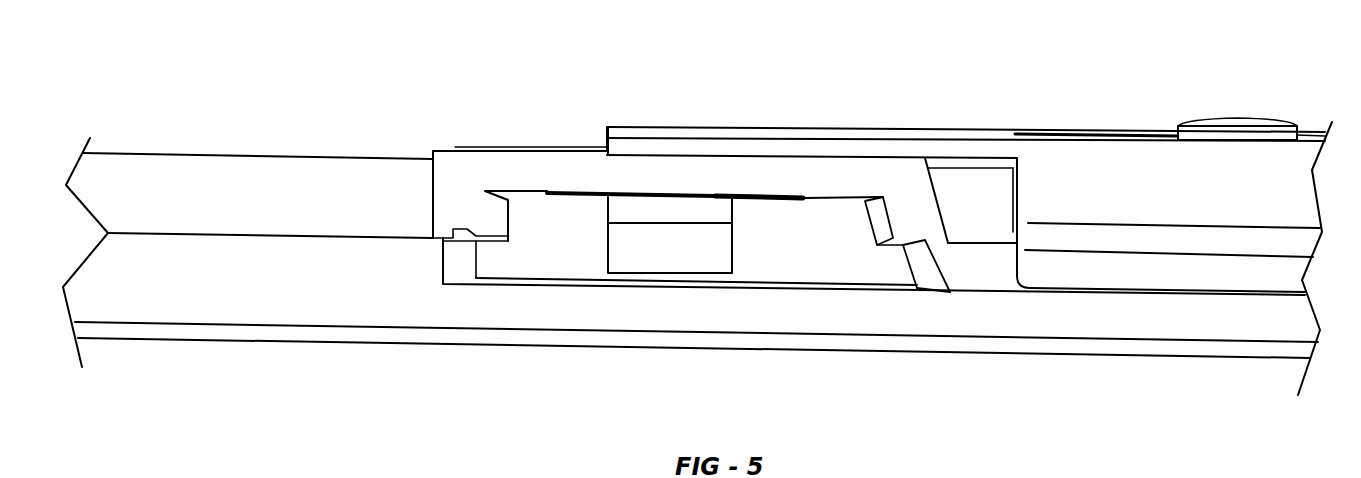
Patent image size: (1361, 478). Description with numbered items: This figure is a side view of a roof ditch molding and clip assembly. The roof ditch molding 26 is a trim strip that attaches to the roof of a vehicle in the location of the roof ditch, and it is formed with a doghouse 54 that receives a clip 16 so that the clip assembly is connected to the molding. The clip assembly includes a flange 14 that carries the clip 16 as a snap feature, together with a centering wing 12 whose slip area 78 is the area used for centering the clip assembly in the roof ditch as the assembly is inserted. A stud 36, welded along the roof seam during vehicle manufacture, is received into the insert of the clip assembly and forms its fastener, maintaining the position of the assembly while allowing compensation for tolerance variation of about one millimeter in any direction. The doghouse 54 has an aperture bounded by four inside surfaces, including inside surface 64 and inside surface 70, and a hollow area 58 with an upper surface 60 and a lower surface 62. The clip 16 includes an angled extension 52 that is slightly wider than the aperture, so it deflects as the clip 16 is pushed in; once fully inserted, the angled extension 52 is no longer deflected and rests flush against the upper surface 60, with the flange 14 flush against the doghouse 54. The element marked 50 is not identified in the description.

The centering wing 12 is at (1225, 268).
The flange 14 is at (787, 128).
The clip 16 is at (708, 207).
The roof ditch molding 26 is at (226, 283).
The stud 36 is at (1265, 120).
The latch assembly 50 is at (572, 119).
The angled extension 52 is at (638, 252).
The doghouse 54 is at (783, 255).
The hollow area 58 is at (578, 258).
The upper surface 60 is at (531, 193).
The lower surface 62 is at (570, 280).
The inside surface 64 is at (547, 197).
The inside surface 70 is at (803, 198).
The slip area 78 is at (1128, 266).